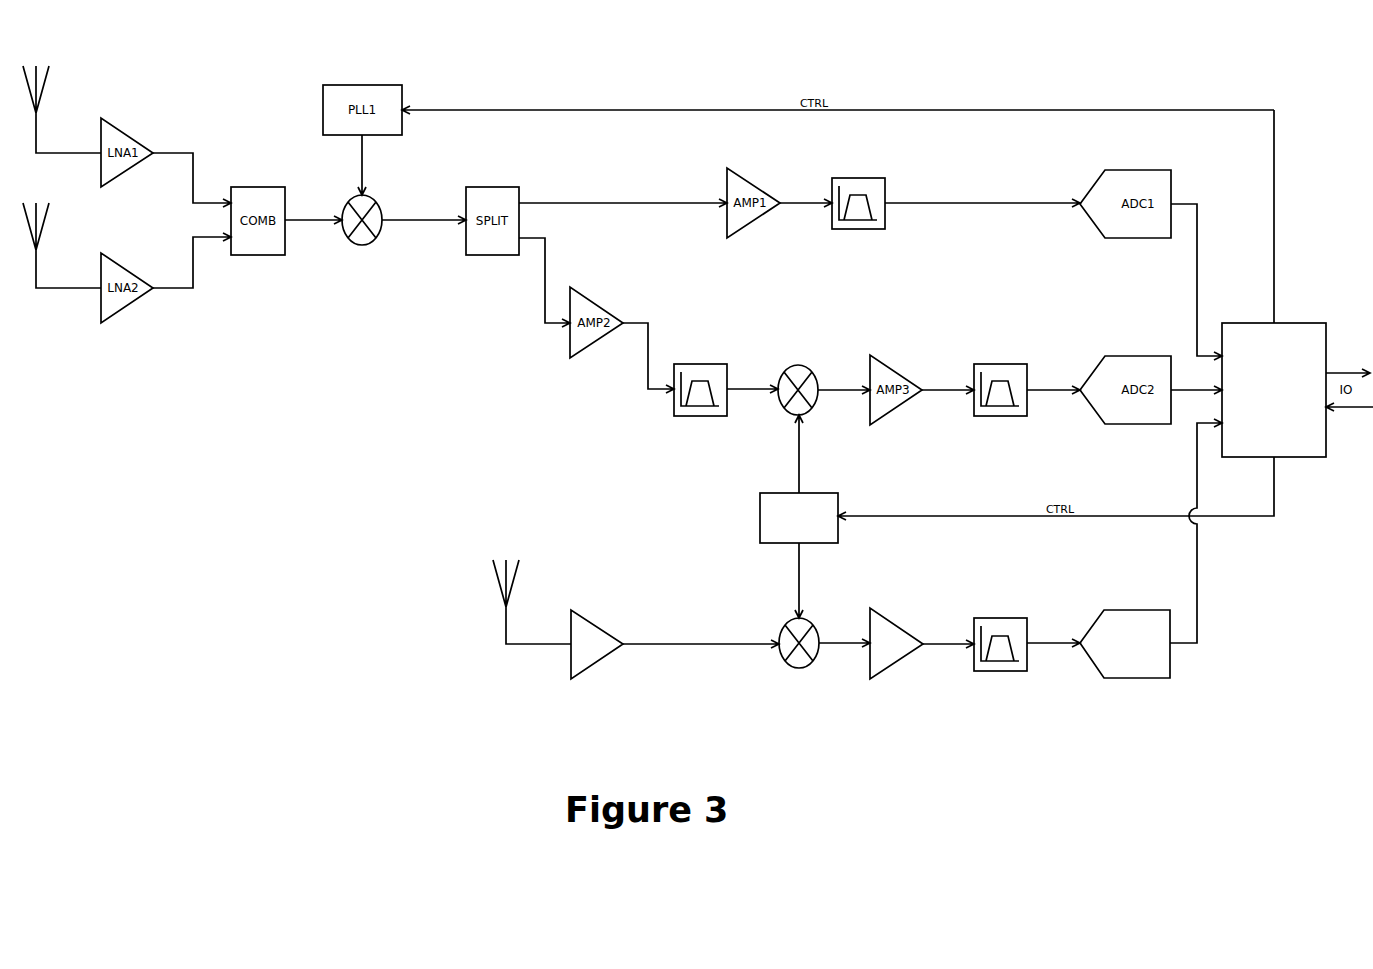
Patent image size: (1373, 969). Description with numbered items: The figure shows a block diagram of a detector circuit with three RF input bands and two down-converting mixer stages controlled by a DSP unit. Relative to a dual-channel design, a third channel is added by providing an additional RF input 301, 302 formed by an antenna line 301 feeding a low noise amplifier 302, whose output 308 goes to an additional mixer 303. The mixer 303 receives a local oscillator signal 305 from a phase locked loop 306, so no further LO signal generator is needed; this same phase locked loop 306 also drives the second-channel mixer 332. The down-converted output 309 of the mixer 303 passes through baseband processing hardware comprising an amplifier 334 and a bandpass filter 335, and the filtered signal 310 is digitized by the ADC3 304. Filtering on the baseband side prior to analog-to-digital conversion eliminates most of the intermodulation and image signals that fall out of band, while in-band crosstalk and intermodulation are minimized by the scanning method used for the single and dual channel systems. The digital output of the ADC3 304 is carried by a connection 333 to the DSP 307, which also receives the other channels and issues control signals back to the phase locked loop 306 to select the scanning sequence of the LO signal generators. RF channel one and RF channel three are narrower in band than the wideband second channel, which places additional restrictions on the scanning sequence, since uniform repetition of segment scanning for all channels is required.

The RF input 301 is at (532, 602).
The RF input 302 is at (597, 645).
The mixer 303 is at (799, 652).
The ADC3 304 is at (1125, 652).
The local oscillator signal from PLL2 305 is at (808, 580).
The phase locked loop PLL2 306 is at (800, 525).
The digital signal processor DSP 307 is at (1274, 399).
The amplified signal line 308 is at (701, 638).
The mixer output signal line 309 is at (844, 638).
The filtered signal line 310 is at (1053, 637).
The mixer 332 is at (798, 383).
The control connection line 333 is at (1196, 531).
The amplifier 334 is at (896, 644).
The bandpass filter 335 is at (1000, 653).